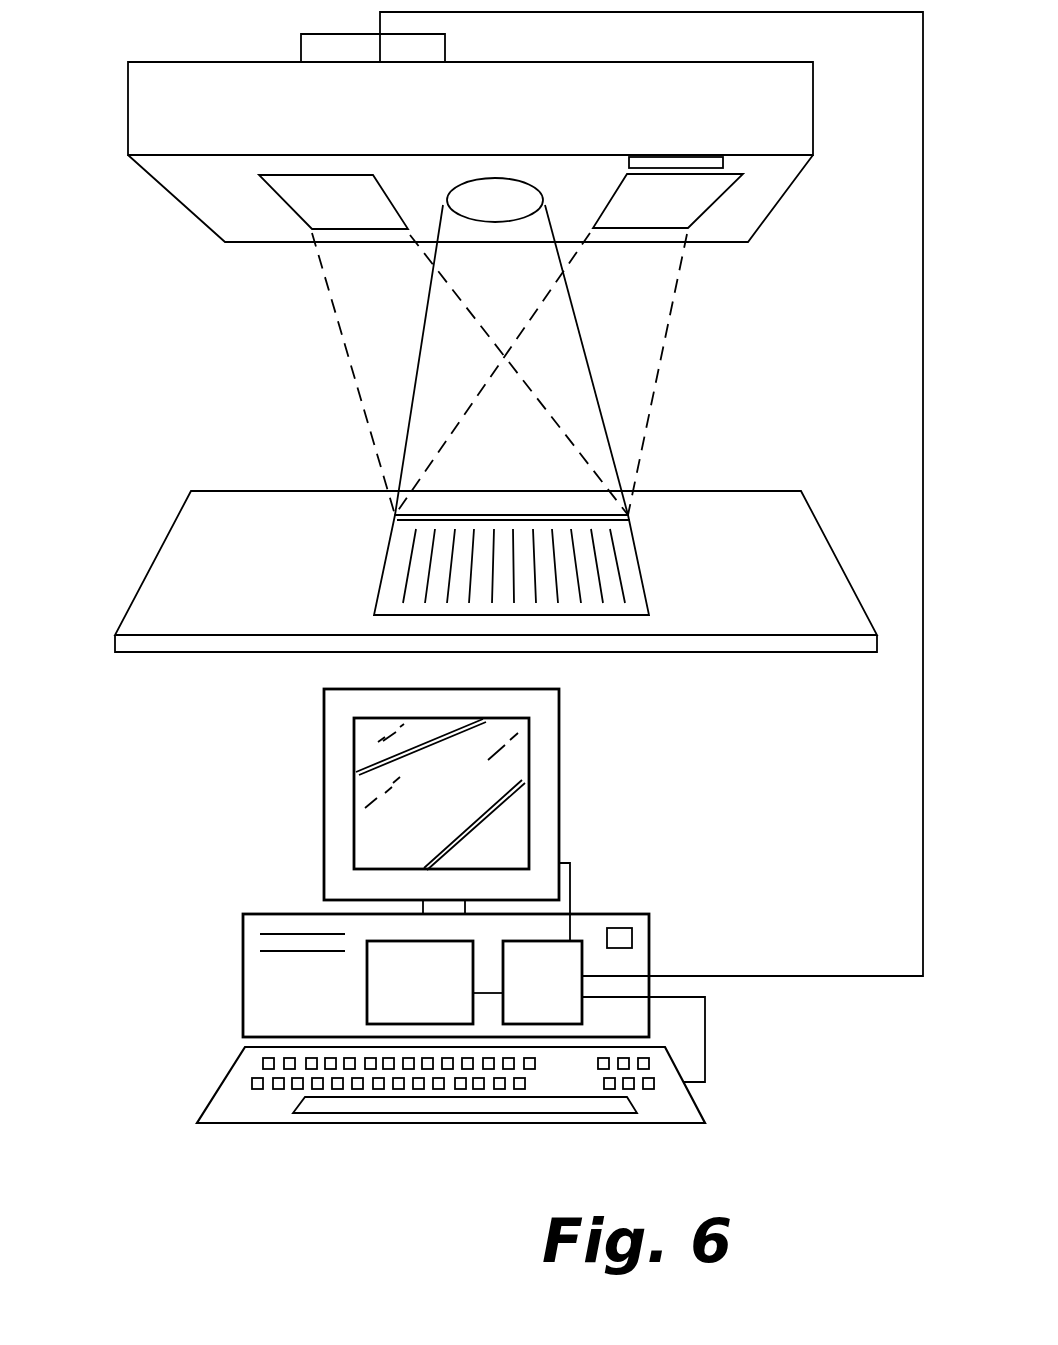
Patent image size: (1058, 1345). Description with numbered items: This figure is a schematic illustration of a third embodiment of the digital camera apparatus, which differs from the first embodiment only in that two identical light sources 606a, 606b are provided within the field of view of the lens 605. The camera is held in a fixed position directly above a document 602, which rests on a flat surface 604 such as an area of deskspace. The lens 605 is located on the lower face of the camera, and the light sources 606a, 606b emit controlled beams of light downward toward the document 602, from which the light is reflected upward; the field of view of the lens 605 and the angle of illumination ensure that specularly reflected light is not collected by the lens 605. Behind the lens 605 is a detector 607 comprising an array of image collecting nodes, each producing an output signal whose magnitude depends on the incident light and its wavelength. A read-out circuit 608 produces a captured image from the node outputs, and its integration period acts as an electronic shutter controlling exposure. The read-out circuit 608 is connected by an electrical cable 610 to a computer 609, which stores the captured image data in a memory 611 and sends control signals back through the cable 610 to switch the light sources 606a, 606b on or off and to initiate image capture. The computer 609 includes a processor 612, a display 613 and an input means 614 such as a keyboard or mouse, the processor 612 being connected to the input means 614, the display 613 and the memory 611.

The document 602 is at (626, 551).
The flat surface 604 is at (786, 506).
The lens 605 is at (170, 233).
The light source 606a is at (323, 208).
The light source 606b is at (713, 200).
The detector 607 is at (723, 163).
The read-out circuit 608 is at (445, 48).
The computer 609 is at (235, 852).
The electrical cable 610 is at (923, 836).
The memory 611 is at (560, 994).
The processor 612 is at (440, 994).
The display 613 is at (559, 783).
The input means 614 is at (417, 1124).